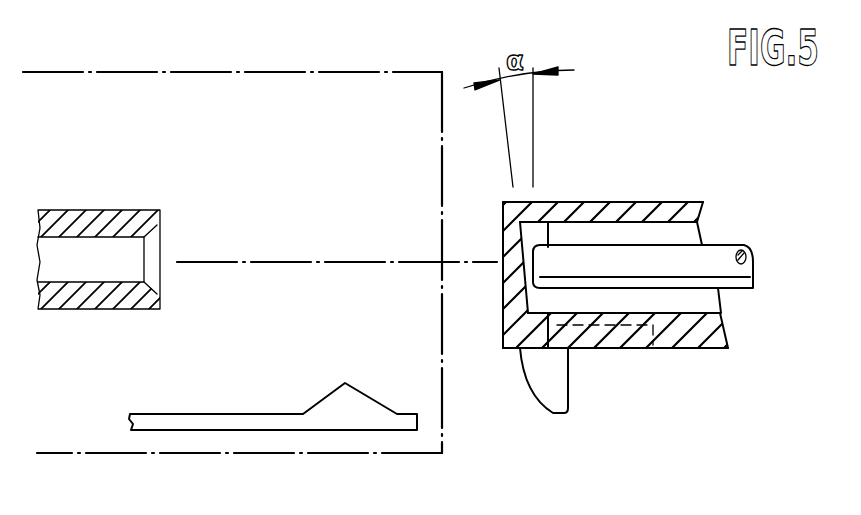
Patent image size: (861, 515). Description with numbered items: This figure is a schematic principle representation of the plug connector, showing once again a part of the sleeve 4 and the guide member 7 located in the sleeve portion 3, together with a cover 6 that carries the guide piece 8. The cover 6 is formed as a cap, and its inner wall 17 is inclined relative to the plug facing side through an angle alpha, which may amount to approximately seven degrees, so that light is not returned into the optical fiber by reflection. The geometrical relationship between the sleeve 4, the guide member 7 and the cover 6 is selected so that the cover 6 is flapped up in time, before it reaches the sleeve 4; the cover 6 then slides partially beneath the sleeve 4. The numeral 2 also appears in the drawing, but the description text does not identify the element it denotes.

The rod 2 is at (728, 245).
The sleeve portion 3 is at (407, 72).
The sleeve 4 is at (132, 222).
The cover 6 is at (510, 313).
The guide member 7 is at (348, 407).
The guide piece 8 is at (562, 378).
The inner wall 17 is at (520, 247).